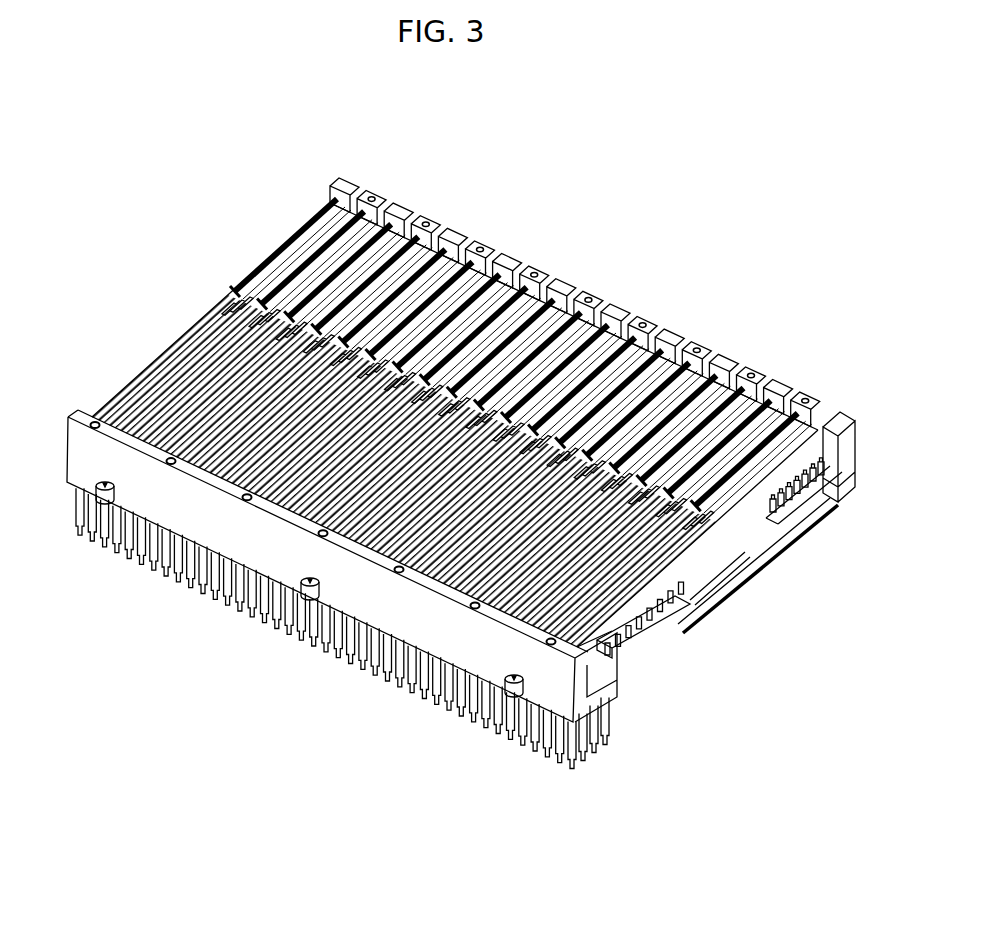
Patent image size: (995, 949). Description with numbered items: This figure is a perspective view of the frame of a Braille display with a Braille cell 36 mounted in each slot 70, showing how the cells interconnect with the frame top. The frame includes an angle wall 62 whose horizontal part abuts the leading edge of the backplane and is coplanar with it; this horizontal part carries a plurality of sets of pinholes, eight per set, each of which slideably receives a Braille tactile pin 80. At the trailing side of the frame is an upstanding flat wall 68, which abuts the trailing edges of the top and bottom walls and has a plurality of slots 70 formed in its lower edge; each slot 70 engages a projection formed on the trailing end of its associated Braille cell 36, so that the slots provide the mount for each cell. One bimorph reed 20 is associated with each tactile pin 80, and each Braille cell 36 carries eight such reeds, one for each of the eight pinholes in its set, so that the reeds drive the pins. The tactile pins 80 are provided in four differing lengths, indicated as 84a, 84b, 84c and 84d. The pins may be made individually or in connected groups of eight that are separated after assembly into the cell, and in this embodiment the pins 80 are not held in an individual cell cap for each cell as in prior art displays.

The Braille cell 36 is at (463, 272).
The slot 70 is at (421, 243).
The angle wall 62 is at (272, 551).
The Braille tactile pin 80 is at (342, 660).
The pin length 84a is at (574, 769).
The pin length 84b is at (584, 762).
The pin length 84c is at (595, 754).
The pin length 84d is at (606, 746).
The upstanding flat wall 68 is at (855, 445).
The bimorph reed 20 is at (713, 573).